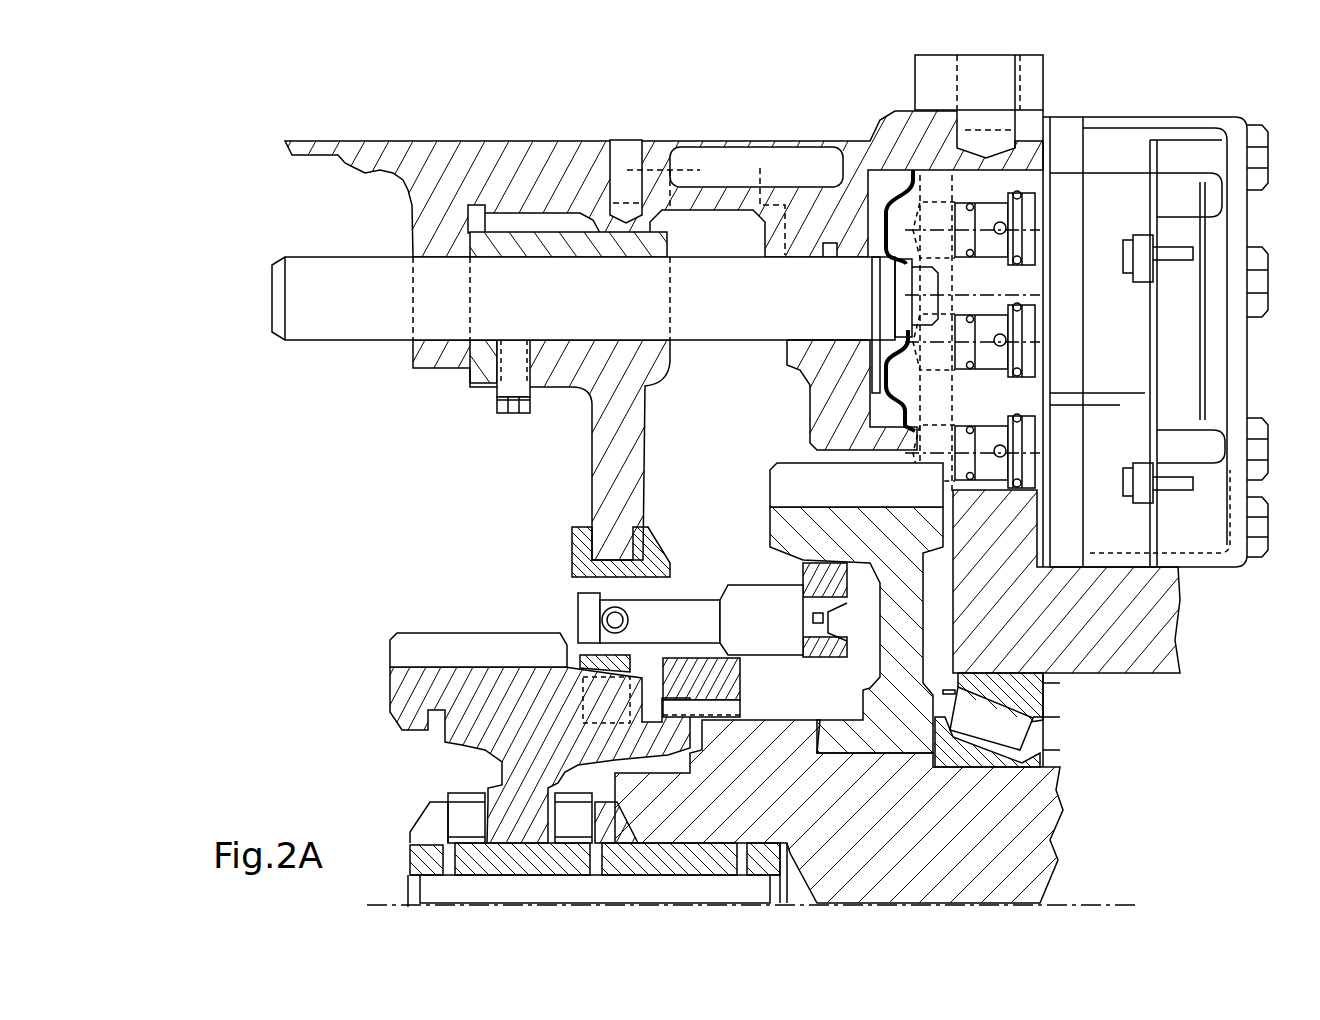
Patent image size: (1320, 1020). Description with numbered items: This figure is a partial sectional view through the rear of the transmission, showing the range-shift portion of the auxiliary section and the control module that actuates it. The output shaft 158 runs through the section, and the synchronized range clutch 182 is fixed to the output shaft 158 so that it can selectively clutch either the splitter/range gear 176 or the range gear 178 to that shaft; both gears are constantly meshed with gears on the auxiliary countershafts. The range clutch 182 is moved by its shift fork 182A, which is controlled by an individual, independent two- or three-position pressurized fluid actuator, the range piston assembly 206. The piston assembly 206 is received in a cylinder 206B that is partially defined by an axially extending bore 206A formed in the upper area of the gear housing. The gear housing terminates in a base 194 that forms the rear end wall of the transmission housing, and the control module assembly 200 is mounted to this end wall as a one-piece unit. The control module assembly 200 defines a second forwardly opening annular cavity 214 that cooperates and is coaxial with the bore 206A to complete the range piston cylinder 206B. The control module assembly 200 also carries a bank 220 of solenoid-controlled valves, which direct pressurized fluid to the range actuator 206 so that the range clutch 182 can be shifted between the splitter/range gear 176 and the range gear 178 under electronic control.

The output shaft 158 is at (838, 824).
The splitter/range gear 176 is at (492, 664).
The range gear 178 is at (845, 496).
The synchronized range clutch 182 is at (720, 515).
The shift fork 182A is at (617, 443).
The base 194 is at (930, 152).
The control module assembly 200 is at (1205, 584).
The range piston assembly 206 is at (903, 371).
The bore 206A is at (530, 340).
The cylinder 206B is at (977, 393).
The second forwardly opening annular cavity 214 is at (1093, 247).
The bank of solenoid-controlled valves 220 is at (1038, 522).